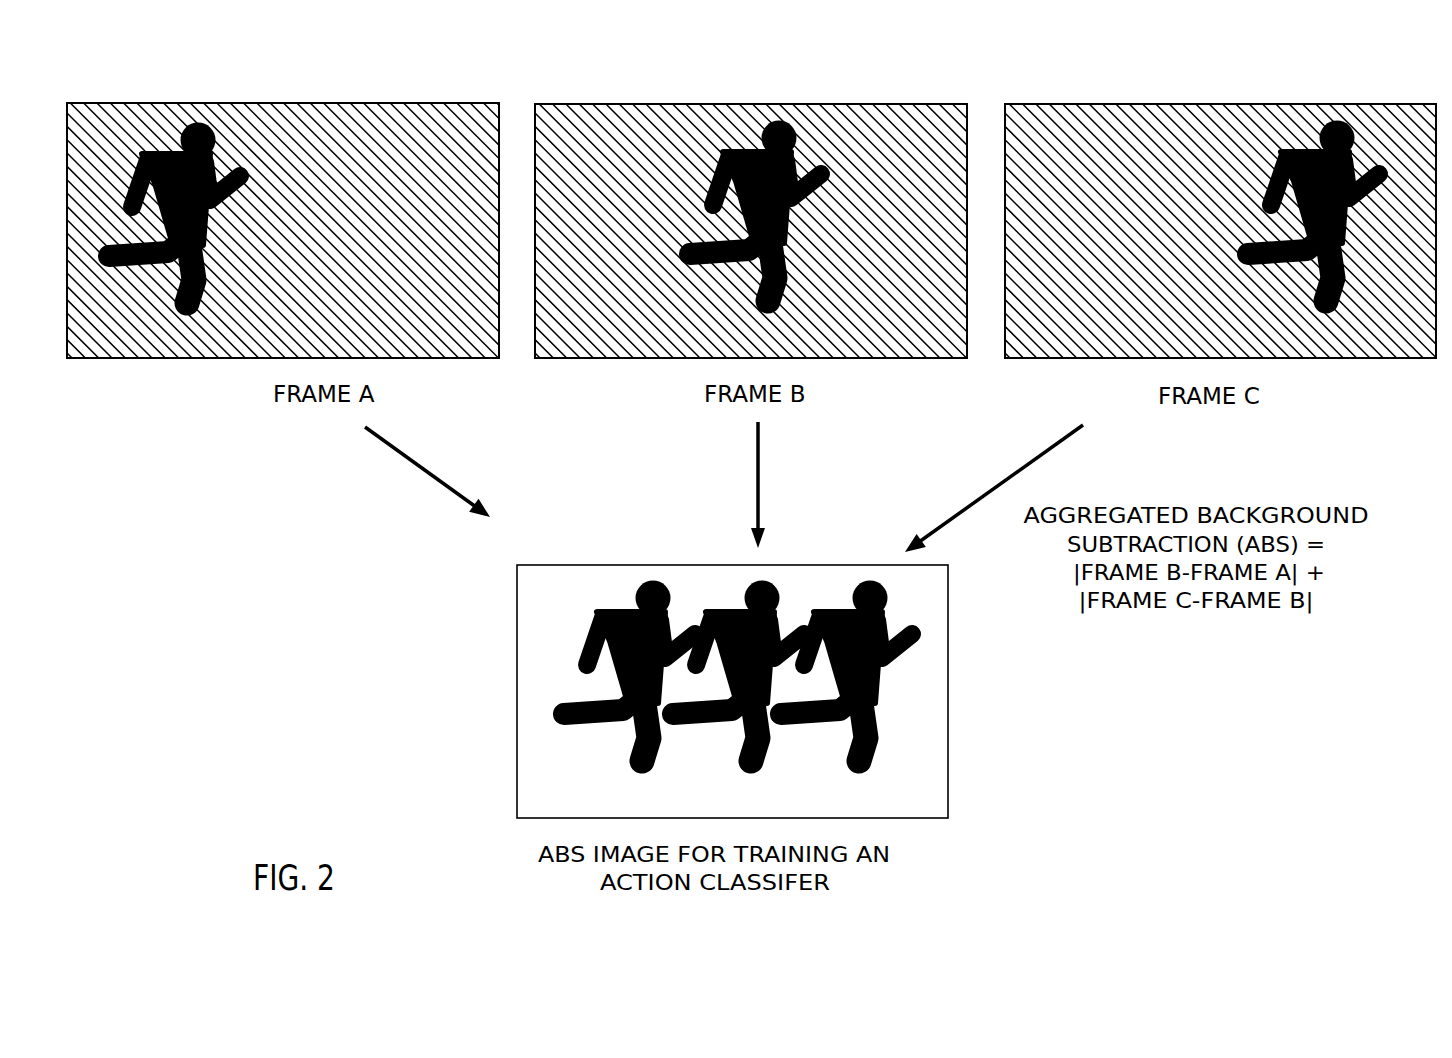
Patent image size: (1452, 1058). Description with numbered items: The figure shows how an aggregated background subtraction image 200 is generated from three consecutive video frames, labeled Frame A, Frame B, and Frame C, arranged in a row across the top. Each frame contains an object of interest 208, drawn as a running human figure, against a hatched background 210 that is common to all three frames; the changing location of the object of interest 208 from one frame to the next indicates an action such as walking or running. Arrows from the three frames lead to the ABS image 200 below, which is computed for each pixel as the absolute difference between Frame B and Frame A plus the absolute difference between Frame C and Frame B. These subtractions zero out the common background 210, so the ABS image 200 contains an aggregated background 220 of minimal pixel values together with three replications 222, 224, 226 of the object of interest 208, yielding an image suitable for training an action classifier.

The aggregated background subtraction image 200 is at (583, 563).
The object of interest 208 is at (192, 122).
The background 210 is at (290, 123).
The aggregated background 220 is at (537, 653).
The replication of the object of interest 222 is at (657, 585).
The replication of the object of interest 224 is at (742, 587).
The replication of the object of interest 226 is at (862, 585).